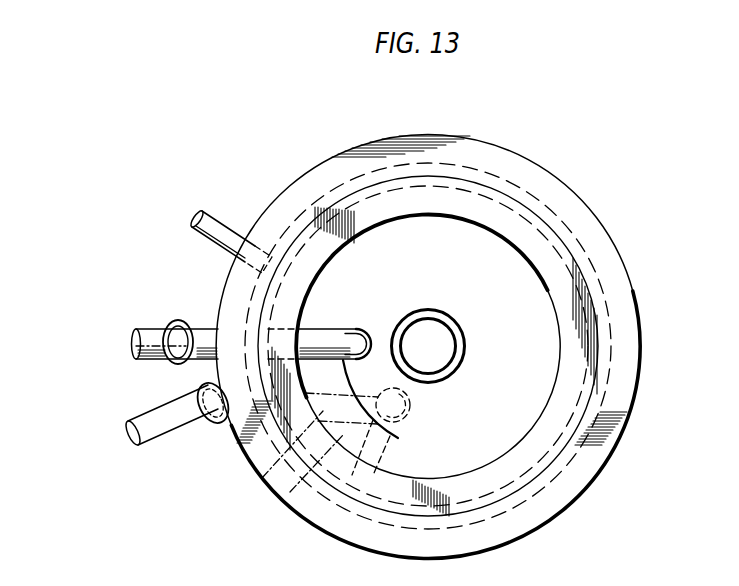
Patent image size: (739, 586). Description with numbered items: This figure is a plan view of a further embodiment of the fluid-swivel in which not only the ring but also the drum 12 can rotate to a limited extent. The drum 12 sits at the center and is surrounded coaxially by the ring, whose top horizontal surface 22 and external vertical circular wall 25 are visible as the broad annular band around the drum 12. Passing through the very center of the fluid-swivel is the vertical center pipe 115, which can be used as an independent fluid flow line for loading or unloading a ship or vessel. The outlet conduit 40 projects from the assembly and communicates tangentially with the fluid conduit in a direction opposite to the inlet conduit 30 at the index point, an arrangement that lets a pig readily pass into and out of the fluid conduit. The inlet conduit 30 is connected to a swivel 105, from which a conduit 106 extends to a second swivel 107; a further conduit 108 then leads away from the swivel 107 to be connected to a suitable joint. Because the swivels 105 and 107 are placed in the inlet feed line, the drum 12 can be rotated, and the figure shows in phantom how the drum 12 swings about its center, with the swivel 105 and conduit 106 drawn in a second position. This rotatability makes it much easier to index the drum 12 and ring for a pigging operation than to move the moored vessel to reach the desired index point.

The drum 12 is at (529, 243).
The top horizontal surface of ring 22 is at (560, 181).
The external vertical circular wall 25 is at (640, 303).
The inlet conduit 30 is at (386, 438).
The outlet conduit 40 is at (208, 213).
The swivel 105 is at (352, 328).
The conduit 106 is at (208, 329).
The swivel 107 is at (178, 321).
The conduit 108 is at (157, 412).
The vertical center pipe 115 is at (466, 331).